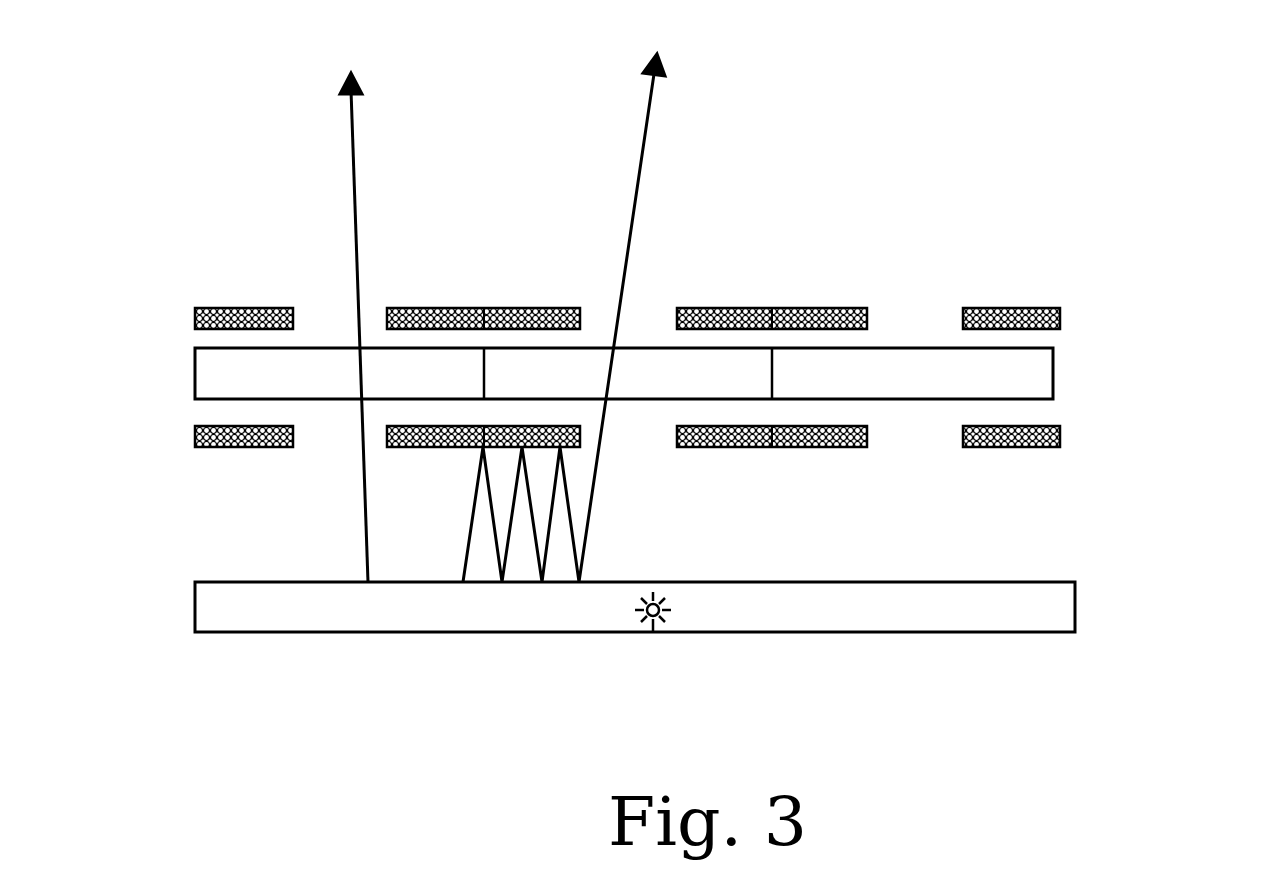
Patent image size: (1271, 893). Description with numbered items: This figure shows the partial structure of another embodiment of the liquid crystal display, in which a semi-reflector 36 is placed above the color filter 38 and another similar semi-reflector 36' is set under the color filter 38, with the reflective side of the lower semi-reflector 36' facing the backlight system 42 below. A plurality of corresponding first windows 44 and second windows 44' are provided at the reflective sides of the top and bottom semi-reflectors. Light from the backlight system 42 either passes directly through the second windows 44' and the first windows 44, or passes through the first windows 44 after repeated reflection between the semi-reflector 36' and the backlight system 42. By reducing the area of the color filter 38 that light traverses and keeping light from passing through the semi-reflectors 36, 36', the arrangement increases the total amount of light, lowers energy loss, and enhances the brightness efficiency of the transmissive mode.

The semi-reflector 36 is at (723, 305).
The semi-reflector 36' is at (730, 482).
The color filter 38 is at (1042, 387).
The backlight system 42 is at (1058, 602).
The first windows 44 is at (934, 251).
The second windows 44' is at (985, 490).